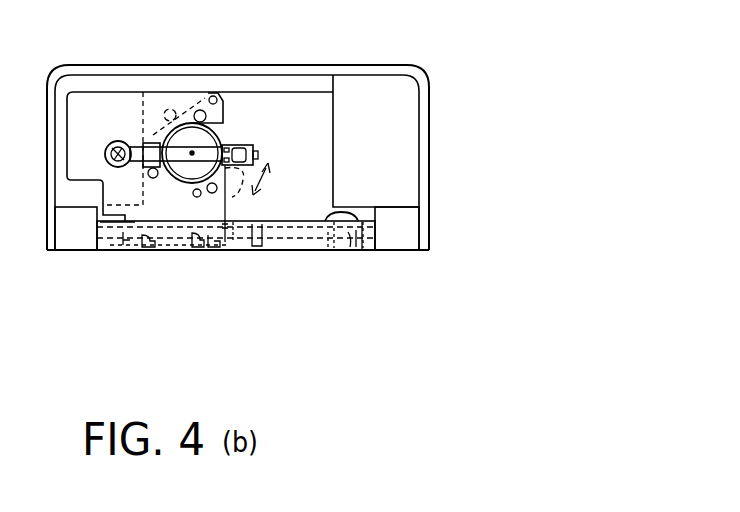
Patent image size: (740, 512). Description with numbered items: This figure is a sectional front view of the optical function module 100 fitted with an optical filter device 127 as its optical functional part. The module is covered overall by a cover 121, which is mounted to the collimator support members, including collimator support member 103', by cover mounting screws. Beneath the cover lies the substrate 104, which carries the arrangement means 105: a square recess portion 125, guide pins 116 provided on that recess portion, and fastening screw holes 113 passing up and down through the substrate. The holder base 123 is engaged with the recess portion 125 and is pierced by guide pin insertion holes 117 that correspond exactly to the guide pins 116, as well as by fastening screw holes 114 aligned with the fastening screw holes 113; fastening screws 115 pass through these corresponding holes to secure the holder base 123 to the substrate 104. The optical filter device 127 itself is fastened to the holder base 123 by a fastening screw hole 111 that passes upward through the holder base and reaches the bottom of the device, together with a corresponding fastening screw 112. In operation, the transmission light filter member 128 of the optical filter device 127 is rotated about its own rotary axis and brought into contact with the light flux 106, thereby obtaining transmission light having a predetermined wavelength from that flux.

The optical function module 100 is at (262, 53).
The collimator support member 103' is at (243, 123).
The substrate 104 is at (67, 242).
The arrangement means 105 is at (432, 350).
The light flux 106 is at (258, 146).
The fastening screw hole 111 is at (197, 243).
The fastening screw 112 is at (160, 237).
The fastening screw holes 113 is at (349, 236).
The fastening screw holes 114 is at (358, 240).
The fastening screws 115 is at (332, 210).
The guide pins 116 is at (257, 228).
The guide pin insertion holes 117 is at (226, 242).
The cover 121 is at (423, 73).
The holder base 123 is at (367, 243).
The square recess portion 125 is at (133, 248).
The optical filter device 127 is at (173, 93).
The transmission light filter member 128 is at (225, 143).